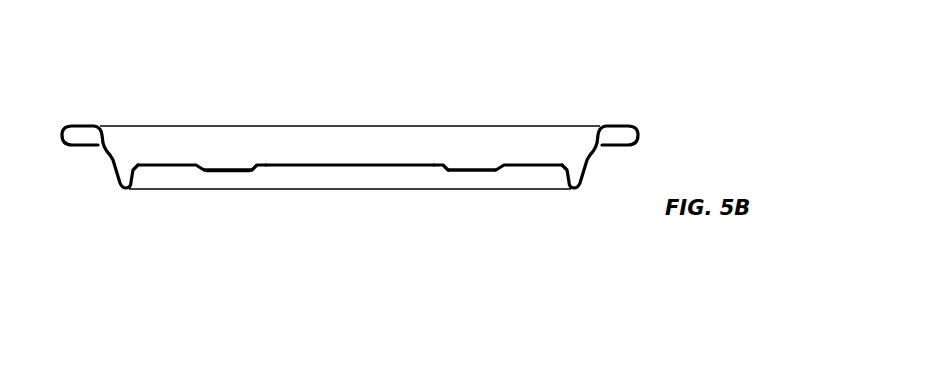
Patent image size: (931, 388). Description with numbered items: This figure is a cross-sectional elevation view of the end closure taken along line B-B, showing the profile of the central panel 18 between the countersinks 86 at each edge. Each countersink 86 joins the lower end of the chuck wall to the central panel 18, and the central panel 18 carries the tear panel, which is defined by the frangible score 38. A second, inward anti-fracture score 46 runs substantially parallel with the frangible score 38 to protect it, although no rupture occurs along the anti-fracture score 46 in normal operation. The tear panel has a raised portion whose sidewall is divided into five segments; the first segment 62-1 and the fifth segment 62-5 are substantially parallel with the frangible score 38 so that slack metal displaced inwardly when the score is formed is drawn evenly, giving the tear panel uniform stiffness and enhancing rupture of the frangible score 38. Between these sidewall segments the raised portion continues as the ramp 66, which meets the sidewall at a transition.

The central panel 18 is at (535, 157).
The frangible score 38 is at (213, 172).
The anti-fracture score 46 is at (230, 172).
The first segment 62-1 is at (259, 168).
The fifth segment 62-5 is at (440, 168).
The ramp 66 is at (413, 155).
The countersink 86 is at (118, 195).